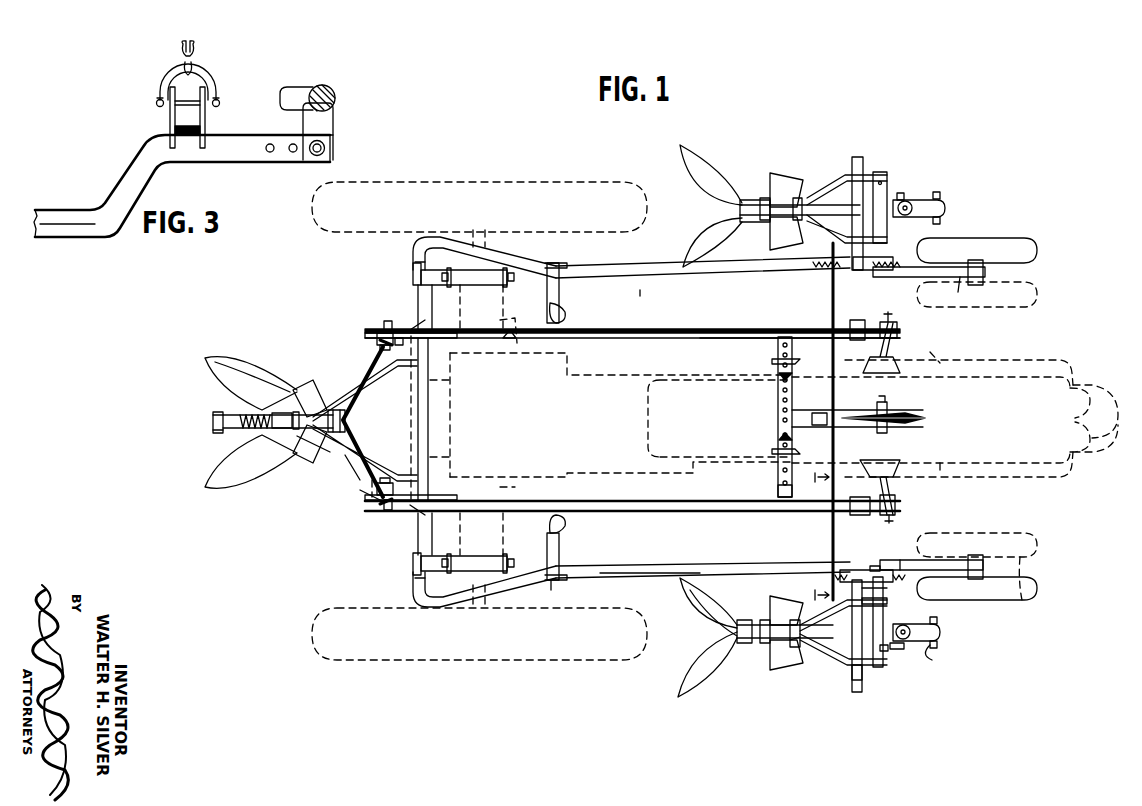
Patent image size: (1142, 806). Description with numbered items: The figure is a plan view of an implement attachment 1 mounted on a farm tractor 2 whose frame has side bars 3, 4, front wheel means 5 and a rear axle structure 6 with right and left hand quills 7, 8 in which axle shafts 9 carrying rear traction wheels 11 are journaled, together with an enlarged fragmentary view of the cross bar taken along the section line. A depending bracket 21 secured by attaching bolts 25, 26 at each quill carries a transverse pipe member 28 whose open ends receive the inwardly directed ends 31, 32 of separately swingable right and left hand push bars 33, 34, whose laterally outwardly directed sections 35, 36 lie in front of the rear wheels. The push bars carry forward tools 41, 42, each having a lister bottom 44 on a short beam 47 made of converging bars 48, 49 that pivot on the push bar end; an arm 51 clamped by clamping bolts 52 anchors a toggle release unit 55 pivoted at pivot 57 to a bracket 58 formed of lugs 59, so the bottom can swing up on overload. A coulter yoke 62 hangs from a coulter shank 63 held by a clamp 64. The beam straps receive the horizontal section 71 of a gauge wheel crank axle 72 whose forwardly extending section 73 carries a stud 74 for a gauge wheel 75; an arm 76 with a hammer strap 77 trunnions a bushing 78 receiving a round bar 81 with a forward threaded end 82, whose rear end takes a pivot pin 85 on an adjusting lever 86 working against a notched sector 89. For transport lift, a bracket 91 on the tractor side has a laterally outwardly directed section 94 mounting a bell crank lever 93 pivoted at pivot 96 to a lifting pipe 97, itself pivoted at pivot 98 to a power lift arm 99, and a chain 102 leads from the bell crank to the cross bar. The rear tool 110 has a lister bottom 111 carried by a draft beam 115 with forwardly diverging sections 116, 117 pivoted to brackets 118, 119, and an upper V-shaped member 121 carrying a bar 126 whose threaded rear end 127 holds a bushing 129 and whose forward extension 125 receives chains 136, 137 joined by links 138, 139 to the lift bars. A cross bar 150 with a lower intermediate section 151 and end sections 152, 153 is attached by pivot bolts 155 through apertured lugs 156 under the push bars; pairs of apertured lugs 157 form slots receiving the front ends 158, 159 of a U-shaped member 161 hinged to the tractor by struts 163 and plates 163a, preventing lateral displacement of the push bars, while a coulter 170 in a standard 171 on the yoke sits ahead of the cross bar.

In FIG. 1, the implement attachment 1 is at (1023, 203).
In FIG. 1, the farm tractor 2 is at (986, 346).
In FIG. 1, the side bar 3 is at (810, 596).
In FIG. 1, the side bar 4 is at (940, 470).
In FIG. 1, the front wheel means 5 is at (1100, 418).
In FIG. 1, the rear axle structure 6 is at (512, 330).
In FIG. 1, the right hand quill 7 is at (508, 489).
In FIG. 1, the left hand quill 8 is at (511, 318).
In FIG. 1, the axle shaft 9 is at (488, 240).
In FIG. 1, the rear traction wheel 11 is at (607, 181).
In FIG. 1, the depending bracket 21 is at (412, 276).
In FIG. 1, the attaching bolt 25 is at (418, 262).
In FIG. 1, the attaching bolt 26 is at (515, 270).
In FIG. 1, the transverse pipe member 28 is at (430, 435).
In FIG. 1, the inwardly directed end 31 is at (450, 458).
In FIG. 1, the inwardly directed end 32 is at (450, 378).
In FIG. 3, the right hand push bar 33 is at (307, 80).
In FIG. 1, the right hand push bar 33 is at (670, 549).
In FIG. 1, the left hand push bar 34 is at (645, 290).
In FIG. 1, the laterally outwardly directed section 35 is at (857, 690).
In FIG. 1, the laterally outwardly directed section 36 is at (860, 157).
In FIG. 1, the right hand forward tool 41 is at (755, 692).
In FIG. 1, the left hand forward tool 42 is at (760, 155).
In FIG. 1, the lister bottom 44 is at (720, 172).
In FIG. 1, the short beam 47 is at (838, 169).
In FIG. 1, the right hand bar 48 is at (798, 656).
In FIG. 1, the left hand bar 49 is at (885, 603).
In FIG. 1, the arm 51 is at (865, 668).
In FIG. 1, the clamping bolt 52 is at (885, 656).
In FIG. 1, the toggle release unit 55 is at (800, 200).
In FIG. 1, the pivot 57 is at (725, 658).
In FIG. 1, the bracket 58 is at (768, 216).
In FIG. 1, the lug 59 is at (795, 198).
In FIG. 1, the yoke 62 is at (937, 650).
In FIG. 1, the coulter shank 63 is at (925, 206).
In FIG. 1, the clamp 64 is at (905, 650).
In FIG. 1, the horizontal section 71 is at (886, 591).
In FIG. 1, the gauge wheel crank axle 72 is at (914, 550).
In FIG. 1, the forwardly extending section 73 is at (972, 564).
In FIG. 1, the stud 74 is at (980, 288).
In FIG. 1, the gauge wheel 75 is at (1028, 252).
In FIG. 1, the arm 76 is at (977, 588).
In FIG. 1, the hammer strap 77 is at (868, 566).
In FIG. 1, the bushing 78 is at (853, 263).
In FIG. 1, the round bar 81 is at (644, 262).
In FIG. 1, the forward threaded end 82 is at (887, 560).
In FIG. 1, the pivot pin 85 is at (551, 582).
In FIG. 1, the adjusting lever 86 is at (565, 310).
In FIG. 1, the sector 89 is at (550, 265).
In FIG. 1, the bracket 91 is at (886, 463).
In FIG. 1, the bell crank lever 93 is at (880, 514).
In FIG. 1, the laterally outwardly directed section 94 is at (891, 483).
In FIG. 1, the pivot 96 is at (857, 320).
In FIG. 1, the lifting pipe 97 is at (688, 329).
In FIG. 1, the pivot 98 is at (390, 330).
In FIG. 1, the power lift arm 99 is at (410, 322).
In FIG. 3, the chain 102 is at (196, 46).
In FIG. 1, the rear tool 110 is at (269, 372).
In FIG. 1, the lister bottom 111 is at (235, 362).
In FIG. 1, the draft beam 115 is at (330, 463).
In FIG. 1, the forwardly diverging section 116 is at (352, 400).
In FIG. 1, the forwardly diverging section 117 is at (362, 500).
In FIG. 1, the bracket 118 is at (438, 512).
In FIG. 1, the bracket 119 is at (432, 322).
In FIG. 1, the V-shaped member 121 is at (389, 392).
In FIG. 1, the forward extension of bar 125 is at (350, 428).
In FIG. 1, the bar 126 is at (310, 395).
In FIG. 1, the threaded rear end 127 is at (223, 432).
In FIG. 1, the bushing 129 is at (282, 430).
In FIG. 1, the chain 136 is at (350, 470).
In FIG. 1, the chain 137 is at (372, 338).
In FIG. 1, the link 138 is at (374, 512).
In FIG. 1, the link 139 is at (376, 336).
In FIG. 3, the cross bar 150 is at (101, 181).
In FIG. 1, the cross bar 150 is at (845, 394).
In FIG. 3, the lower intermediate section 151 is at (66, 233).
In FIG. 3, the end section 152 is at (244, 163).
In FIG. 1, the end section 153 is at (830, 286).
In FIG. 3, the pivot bolt 155 is at (326, 147).
In FIG. 3, the apertured lug 156 is at (328, 107).
In FIG. 3, the apertured lug 157 is at (172, 128).
In FIG. 3, the front end 158 is at (178, 120).
In FIG. 1, the front end 158 is at (775, 490).
In FIG. 1, the front end 159 is at (806, 326).
In FIG. 1, the U-shaped member 161 is at (767, 412).
In FIG. 1, the strut 163 is at (772, 360).
In FIG. 1, the plate 163a is at (790, 372).
In FIG. 1, the coulter 170 is at (916, 411).
In FIG. 1, the standard 171 is at (824, 398).